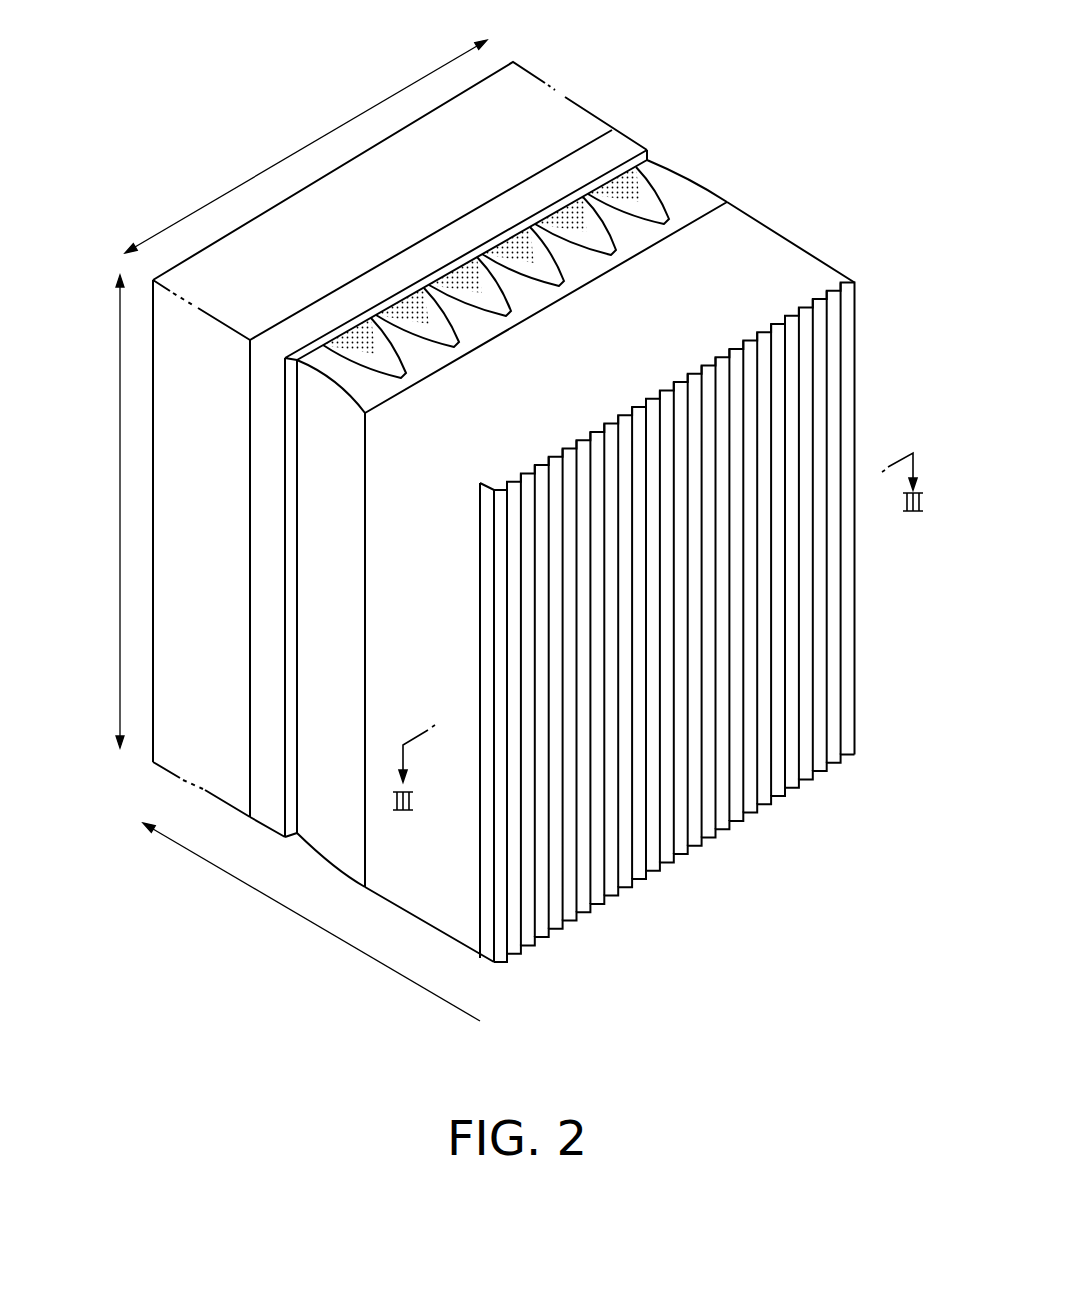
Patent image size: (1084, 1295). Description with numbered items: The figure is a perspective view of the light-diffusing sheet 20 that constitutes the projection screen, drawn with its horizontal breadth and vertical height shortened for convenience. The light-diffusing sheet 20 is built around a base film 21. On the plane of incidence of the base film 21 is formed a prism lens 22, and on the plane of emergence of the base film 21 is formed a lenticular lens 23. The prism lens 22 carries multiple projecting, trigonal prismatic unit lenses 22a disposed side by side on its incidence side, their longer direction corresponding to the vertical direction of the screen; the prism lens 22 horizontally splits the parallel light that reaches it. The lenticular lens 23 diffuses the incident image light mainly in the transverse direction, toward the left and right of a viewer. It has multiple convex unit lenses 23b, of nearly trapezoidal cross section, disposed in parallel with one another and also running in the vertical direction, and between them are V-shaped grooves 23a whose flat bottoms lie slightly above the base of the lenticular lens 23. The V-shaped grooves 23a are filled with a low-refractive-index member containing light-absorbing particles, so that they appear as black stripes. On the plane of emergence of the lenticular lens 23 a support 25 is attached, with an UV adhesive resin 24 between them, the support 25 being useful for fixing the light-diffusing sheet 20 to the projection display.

The light-diffusing sheet 20 is at (818, 118).
The base film 21 is at (765, 240).
The prism lens 22 is at (701, 587).
The unit lenses 22a is at (707, 833).
The lenticular lens 23 is at (528, 502).
The V-shaped grooves 23a is at (437, 267).
The unit lenses 23b is at (582, 197).
The UV adhesive resin 24 is at (613, 146).
The support 25 is at (565, 110).